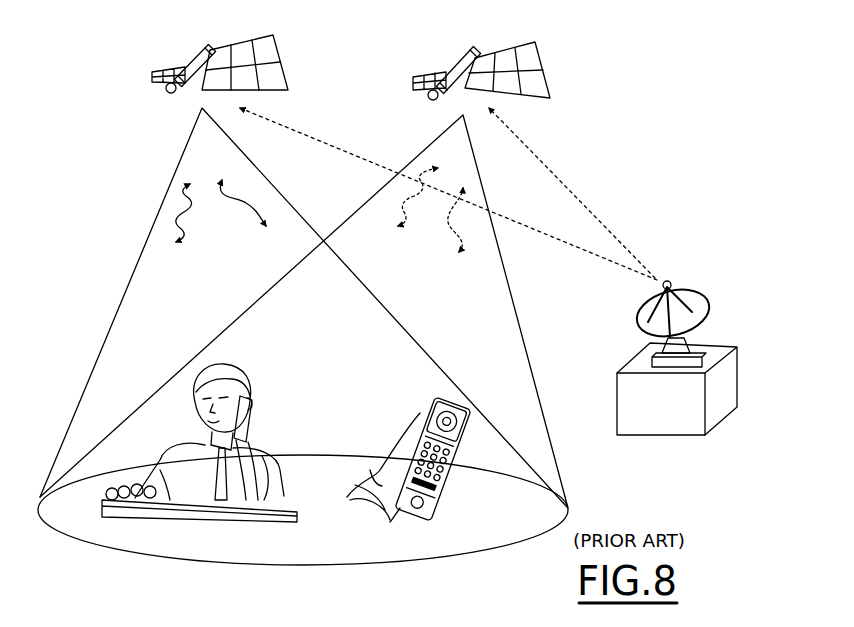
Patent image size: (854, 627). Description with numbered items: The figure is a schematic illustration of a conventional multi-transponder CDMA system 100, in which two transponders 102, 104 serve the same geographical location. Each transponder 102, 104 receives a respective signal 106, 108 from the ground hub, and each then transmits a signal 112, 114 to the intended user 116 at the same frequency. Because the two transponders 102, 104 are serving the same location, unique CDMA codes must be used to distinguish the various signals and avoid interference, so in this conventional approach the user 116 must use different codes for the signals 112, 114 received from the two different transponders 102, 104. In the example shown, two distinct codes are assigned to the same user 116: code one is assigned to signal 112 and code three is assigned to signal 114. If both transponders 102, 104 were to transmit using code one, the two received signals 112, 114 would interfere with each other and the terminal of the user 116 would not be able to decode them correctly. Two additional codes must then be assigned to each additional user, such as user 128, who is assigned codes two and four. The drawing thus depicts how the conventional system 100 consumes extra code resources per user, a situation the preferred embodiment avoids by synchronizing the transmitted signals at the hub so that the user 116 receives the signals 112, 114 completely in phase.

The system 100 is at (728, 378).
The transponder 102 is at (216, 44).
The transponder 104 is at (483, 45).
The signal 106 is at (560, 184).
The signal 108 is at (563, 243).
The signal 112 is at (362, 206).
The signal 114 is at (157, 213).
The user 116 is at (266, 422).
The user 128 is at (455, 492).